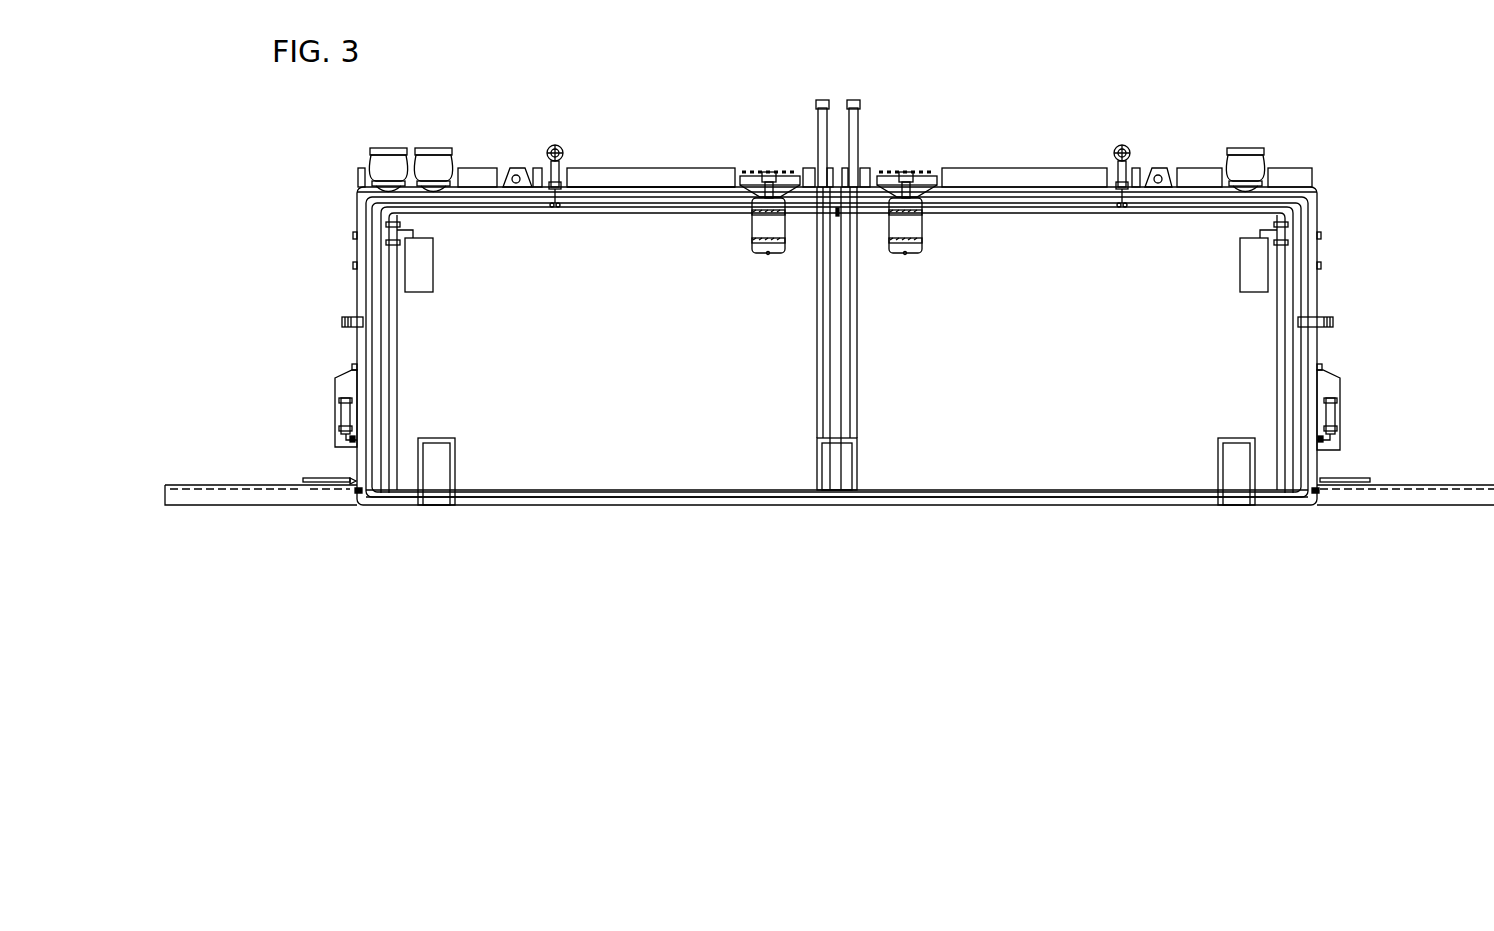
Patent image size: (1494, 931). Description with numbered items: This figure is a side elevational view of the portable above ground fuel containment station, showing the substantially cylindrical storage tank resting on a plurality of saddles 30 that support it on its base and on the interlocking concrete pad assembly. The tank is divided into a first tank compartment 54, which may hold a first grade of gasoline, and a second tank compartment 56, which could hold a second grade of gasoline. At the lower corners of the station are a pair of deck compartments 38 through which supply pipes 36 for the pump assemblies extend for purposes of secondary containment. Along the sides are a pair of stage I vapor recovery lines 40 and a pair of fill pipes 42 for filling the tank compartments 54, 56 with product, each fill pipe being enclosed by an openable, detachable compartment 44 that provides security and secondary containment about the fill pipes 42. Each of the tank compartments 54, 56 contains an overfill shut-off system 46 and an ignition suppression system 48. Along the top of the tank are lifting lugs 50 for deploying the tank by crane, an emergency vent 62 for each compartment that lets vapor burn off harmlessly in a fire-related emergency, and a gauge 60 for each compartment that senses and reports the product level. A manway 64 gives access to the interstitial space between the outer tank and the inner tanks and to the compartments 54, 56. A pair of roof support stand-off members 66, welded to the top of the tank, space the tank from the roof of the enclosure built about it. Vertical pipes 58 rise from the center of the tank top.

The saddles 30 is at (450, 463).
The supply pipes 36 is at (1302, 465).
The deck compartments 38 is at (175, 492).
The stage I vapor recovery lines 40 is at (350, 320).
The fill pipes 42 is at (343, 416).
The openable, detachable compartment 44 is at (338, 388).
The overfill shut-off system 46 is at (425, 268).
The ignition suppression system 48 is at (767, 262).
The lifting lugs 50 is at (515, 168).
The first tank compartment 54 is at (645, 245).
The second tank compartment 56 is at (1082, 383).
The vertical pipes 58 is at (815, 102).
The gauge 60 is at (1125, 148).
The emergency vent 62 is at (387, 147).
The manway 64 is at (903, 168).
The roof support stand-off members 66 is at (620, 168).